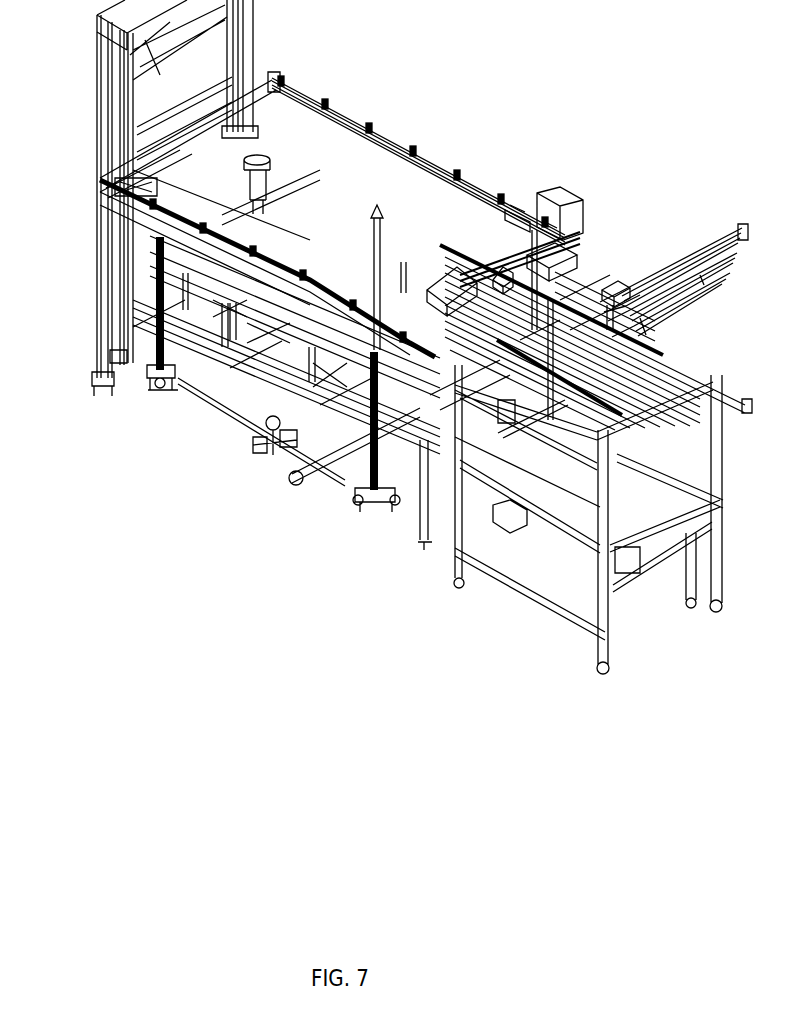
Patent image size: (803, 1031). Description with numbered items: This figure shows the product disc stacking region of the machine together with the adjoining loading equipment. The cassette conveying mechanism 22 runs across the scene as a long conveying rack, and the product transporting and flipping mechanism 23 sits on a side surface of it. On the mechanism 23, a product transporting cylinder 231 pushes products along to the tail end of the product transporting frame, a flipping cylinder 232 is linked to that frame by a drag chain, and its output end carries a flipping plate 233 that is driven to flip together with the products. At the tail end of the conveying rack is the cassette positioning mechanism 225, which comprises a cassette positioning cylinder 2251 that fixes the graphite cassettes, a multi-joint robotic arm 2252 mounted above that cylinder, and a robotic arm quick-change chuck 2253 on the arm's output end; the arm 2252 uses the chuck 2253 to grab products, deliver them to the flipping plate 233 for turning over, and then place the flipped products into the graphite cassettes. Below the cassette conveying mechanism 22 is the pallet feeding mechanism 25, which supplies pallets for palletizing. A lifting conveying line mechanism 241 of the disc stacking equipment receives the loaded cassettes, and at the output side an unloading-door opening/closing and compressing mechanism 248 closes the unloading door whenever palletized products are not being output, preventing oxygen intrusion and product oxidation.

The cassette conveying mechanism 22 is at (667, 352).
The product transporting and flipping mechanism 23 is at (630, 280).
The pallet feeding mechanism 25 is at (550, 523).
The cassette positioning mechanism 225 is at (478, 265).
The product transporting cylinder 231 is at (710, 242).
The flipping cylinder 232 is at (640, 307).
The flipping plate 233 is at (637, 317).
The lifting conveying line mechanism 241 is at (168, 393).
The unloading-door opening/closing and compressing mechanism 248 is at (108, 290).
The cassette positioning cylinder 2251 is at (425, 452).
The multi-joint robotic arm 2252 is at (580, 195).
The robotic arm quick-change chuck 2253 is at (517, 217).